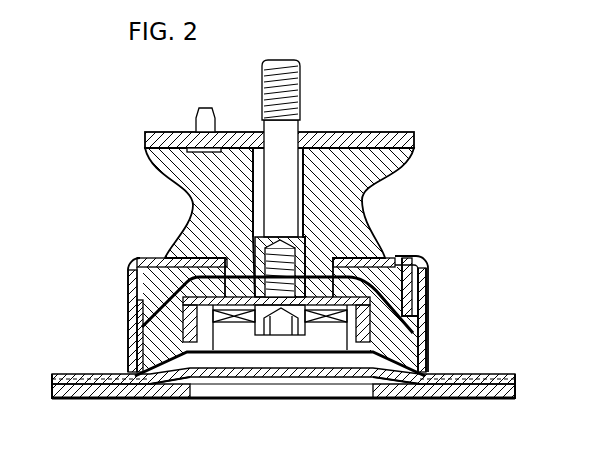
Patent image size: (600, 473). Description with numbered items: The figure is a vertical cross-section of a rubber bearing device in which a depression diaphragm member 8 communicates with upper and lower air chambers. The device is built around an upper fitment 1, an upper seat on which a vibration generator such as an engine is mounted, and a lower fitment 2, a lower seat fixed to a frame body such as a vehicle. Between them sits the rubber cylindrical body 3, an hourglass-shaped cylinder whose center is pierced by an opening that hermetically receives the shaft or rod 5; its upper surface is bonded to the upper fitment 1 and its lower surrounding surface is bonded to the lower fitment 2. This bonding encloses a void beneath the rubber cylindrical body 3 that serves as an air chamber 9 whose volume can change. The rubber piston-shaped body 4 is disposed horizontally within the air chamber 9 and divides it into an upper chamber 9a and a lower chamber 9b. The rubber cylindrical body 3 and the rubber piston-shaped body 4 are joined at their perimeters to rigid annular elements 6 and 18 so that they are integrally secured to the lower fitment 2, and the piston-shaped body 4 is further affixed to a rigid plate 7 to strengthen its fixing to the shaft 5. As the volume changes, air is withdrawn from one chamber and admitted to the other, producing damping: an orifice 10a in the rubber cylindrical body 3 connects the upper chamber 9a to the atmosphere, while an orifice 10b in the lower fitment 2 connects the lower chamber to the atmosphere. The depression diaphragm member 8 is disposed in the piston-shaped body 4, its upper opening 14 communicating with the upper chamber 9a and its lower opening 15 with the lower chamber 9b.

The upper fitment 1 is at (341, 136).
The lower fitment 2 is at (452, 396).
The rubber cylindrical body 3 is at (348, 193).
The rubber piston-shaped body 4 is at (395, 338).
The shaft or rod 5 is at (300, 98).
The rigid annular element 6 is at (133, 260).
The rigid plate 7 is at (190, 291).
The depression diaphragm member 8 is at (342, 246).
The air chamber 9 is at (216, 356).
The upper chamber 9a is at (174, 257).
The lower chamber 9b is at (165, 388).
The orifice 10a is at (405, 257).
The orifice 10b is at (277, 374).
The upper opening 14 is at (428, 272).
The lower opening 15 is at (318, 347).
The rigid annular element 18 is at (141, 345).